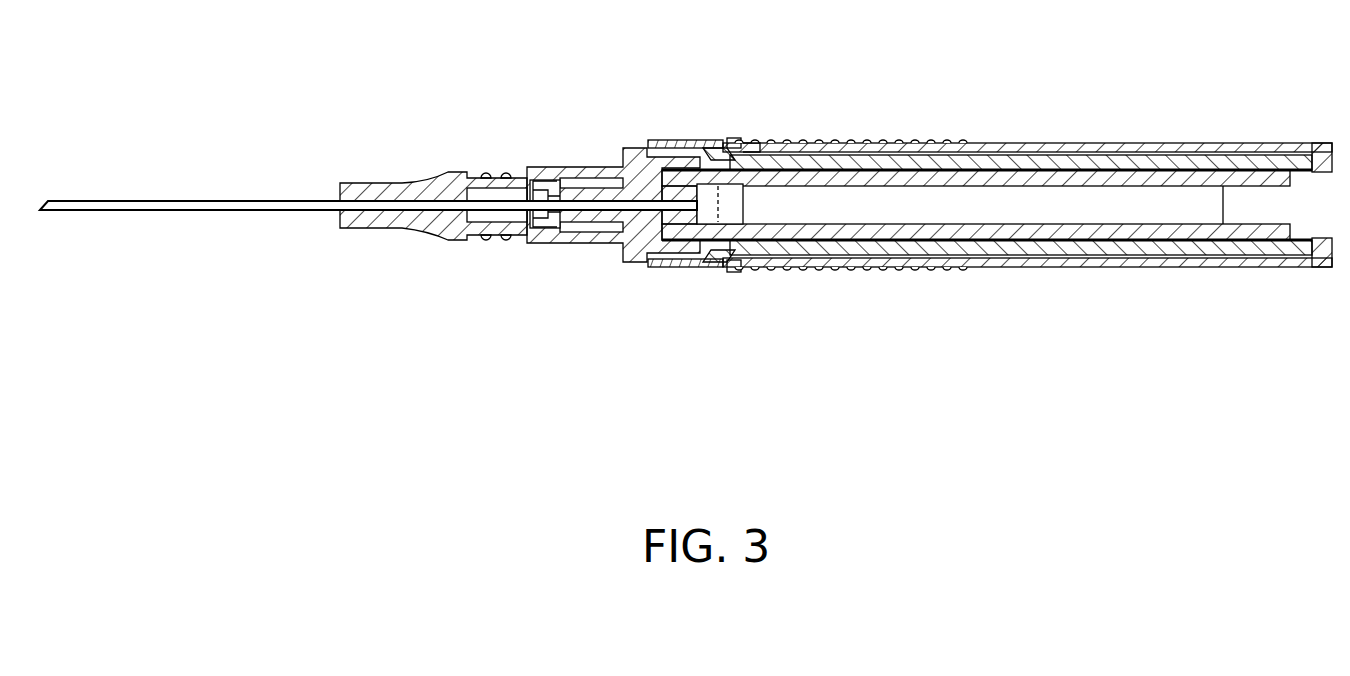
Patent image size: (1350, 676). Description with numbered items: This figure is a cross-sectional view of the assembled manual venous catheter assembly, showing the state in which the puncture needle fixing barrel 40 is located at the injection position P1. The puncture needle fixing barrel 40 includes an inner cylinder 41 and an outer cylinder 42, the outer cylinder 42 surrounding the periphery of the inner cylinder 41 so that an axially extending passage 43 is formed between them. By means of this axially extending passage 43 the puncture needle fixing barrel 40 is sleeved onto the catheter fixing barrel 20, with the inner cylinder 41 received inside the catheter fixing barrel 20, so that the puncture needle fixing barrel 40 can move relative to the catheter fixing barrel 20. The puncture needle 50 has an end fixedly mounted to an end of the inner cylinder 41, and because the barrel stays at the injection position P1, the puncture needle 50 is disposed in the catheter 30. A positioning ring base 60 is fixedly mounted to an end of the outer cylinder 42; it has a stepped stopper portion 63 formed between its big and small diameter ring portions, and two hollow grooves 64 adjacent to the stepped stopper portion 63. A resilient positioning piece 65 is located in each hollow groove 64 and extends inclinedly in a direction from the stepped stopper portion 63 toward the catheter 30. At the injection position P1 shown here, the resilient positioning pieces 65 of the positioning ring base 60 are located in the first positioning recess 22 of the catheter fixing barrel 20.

The catheter fixing barrel 20 is at (1067, 165).
The first positioning recess 22 is at (748, 148).
The catheter 30 is at (358, 183).
The puncture needle fixing barrel 40 is at (1225, 63).
The inner cylinder 41 is at (1197, 160).
The outer cylinder 42 is at (1117, 153).
The axially extending passage 43 is at (1040, 158).
The puncture needle 50 is at (198, 205).
The positioning ring base 60 is at (646, 141).
The stepped stopper portion 63 is at (745, 263).
The hollow grooves 64 is at (698, 142).
The resilient positioning pieces 65 is at (723, 139).
The injection position P1 is at (1180, 320).